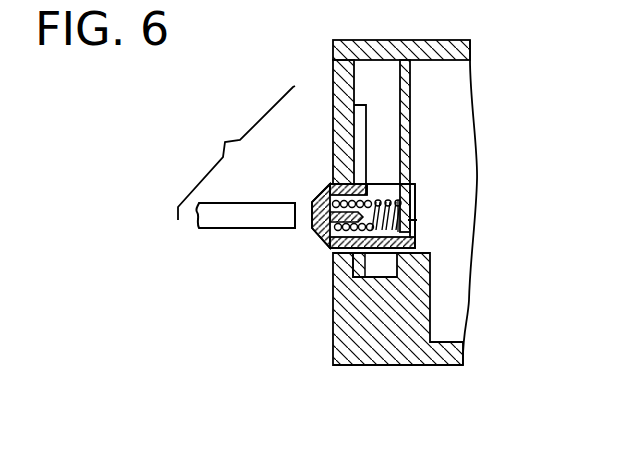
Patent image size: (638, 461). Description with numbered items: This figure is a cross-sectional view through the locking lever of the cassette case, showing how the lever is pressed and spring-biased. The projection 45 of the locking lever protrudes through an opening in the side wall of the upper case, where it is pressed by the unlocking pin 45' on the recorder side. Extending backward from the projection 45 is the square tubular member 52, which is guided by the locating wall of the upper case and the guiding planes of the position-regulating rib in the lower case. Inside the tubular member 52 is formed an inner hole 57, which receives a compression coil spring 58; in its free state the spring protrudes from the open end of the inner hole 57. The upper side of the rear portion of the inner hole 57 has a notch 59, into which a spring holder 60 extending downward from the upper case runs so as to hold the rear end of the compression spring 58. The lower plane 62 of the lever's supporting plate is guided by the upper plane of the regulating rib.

The projection 45 is at (331, 205).
The unlocking pin 45' is at (239, 244).
The tubular member 52 is at (383, 252).
The inner hole 57 is at (330, 247).
The compression coil spring 58 is at (416, 187).
The notch 59 is at (403, 200).
The spring holder 60 is at (410, 213).
The lower plane 62 is at (355, 270).